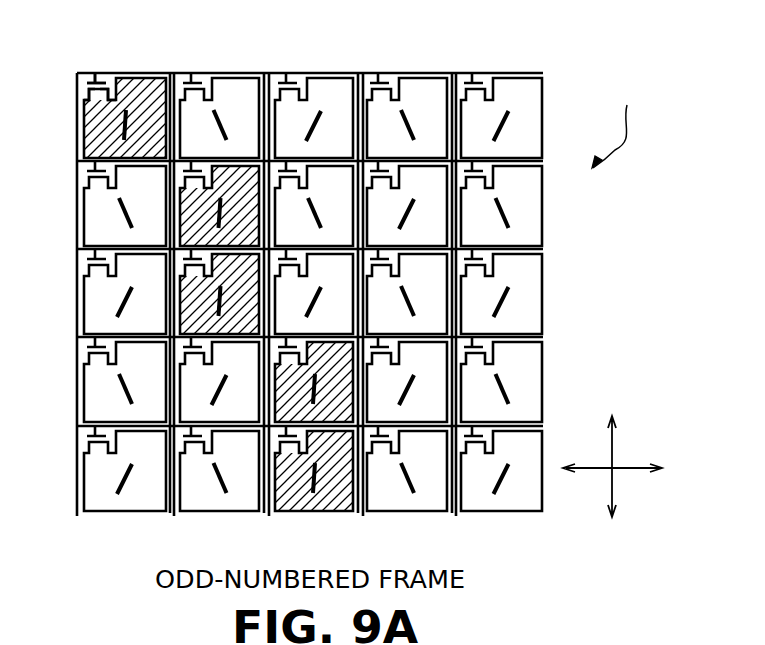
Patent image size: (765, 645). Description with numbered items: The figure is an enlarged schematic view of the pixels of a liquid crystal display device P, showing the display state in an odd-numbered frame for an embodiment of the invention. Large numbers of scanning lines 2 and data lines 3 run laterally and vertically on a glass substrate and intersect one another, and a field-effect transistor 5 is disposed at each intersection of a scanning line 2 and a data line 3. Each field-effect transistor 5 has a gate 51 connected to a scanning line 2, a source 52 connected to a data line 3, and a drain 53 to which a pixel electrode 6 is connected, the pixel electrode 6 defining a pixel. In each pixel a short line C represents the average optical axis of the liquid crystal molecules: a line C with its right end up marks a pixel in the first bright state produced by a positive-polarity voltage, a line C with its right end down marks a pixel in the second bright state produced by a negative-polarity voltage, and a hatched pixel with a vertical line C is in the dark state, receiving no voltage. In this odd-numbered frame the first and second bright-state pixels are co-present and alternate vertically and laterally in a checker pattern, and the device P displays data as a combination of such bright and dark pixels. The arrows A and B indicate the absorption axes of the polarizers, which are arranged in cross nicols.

The scanning line 2 is at (562, 407).
The data line 3 is at (472, 541).
The field-effect transistor 5 is at (158, 38).
The gate 51 is at (92, 82).
The source 52 is at (84, 90).
The drain 53 is at (111, 86).
The pixel electrode 6 is at (153, 84).
The short line C is at (322, 108).
The liquid crystal display device P is at (642, 97).
The arrow A is at (612, 443).
The arrow B is at (630, 468).